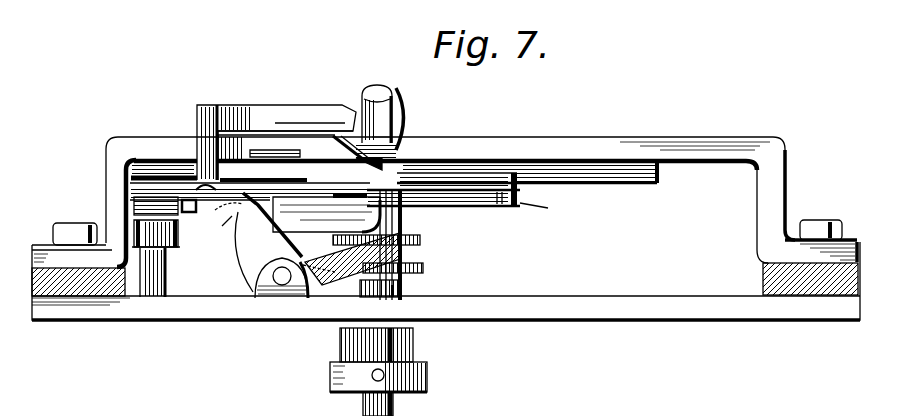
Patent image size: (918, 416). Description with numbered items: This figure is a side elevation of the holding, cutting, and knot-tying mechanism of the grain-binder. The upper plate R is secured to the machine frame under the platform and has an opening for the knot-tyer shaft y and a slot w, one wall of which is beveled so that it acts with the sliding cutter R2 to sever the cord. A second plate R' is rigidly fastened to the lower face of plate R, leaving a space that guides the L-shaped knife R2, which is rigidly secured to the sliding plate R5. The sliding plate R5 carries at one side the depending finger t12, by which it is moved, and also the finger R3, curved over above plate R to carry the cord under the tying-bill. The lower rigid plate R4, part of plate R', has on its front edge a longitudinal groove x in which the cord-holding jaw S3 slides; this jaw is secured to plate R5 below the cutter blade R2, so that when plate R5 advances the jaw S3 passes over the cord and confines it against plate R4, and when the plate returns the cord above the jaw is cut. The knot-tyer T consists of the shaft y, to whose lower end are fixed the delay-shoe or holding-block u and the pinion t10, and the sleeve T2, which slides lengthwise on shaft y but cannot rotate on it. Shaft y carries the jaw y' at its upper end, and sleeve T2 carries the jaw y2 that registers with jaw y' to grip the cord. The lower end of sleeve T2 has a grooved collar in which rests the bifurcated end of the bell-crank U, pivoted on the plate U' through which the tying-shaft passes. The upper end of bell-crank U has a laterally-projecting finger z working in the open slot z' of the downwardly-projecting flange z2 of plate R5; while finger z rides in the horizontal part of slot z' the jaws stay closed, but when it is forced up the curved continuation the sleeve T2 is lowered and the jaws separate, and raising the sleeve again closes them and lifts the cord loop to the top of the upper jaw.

The upper plate R is at (450, 188).
The second plate R' is at (464, 190).
The sliding cutter R2 is at (308, 155).
The finger R3 is at (273, 113).
The lower rigid plate R4 is at (457, 195).
The sliding plate R5 is at (702, 167).
The knot-tyer T is at (407, 115).
The sleeve T2 is at (404, 222).
The cord-holding jaw S3 is at (448, 241).
The bell-crank U is at (317, 245).
The plate U' is at (446, 270).
The holding-block u is at (430, 377).
The slot w is at (398, 155).
The longitudinal groove x is at (541, 212).
The knot-tyer shaft y is at (404, 289).
The jaw y' is at (370, 105).
The jaw y2 is at (379, 128).
The laterally-projecting finger z is at (224, 211).
The open slot z' is at (265, 169).
The downwardly-projecting flange z2 is at (217, 228).
The pinion t10 is at (415, 349).
The depending finger t12 is at (169, 276).